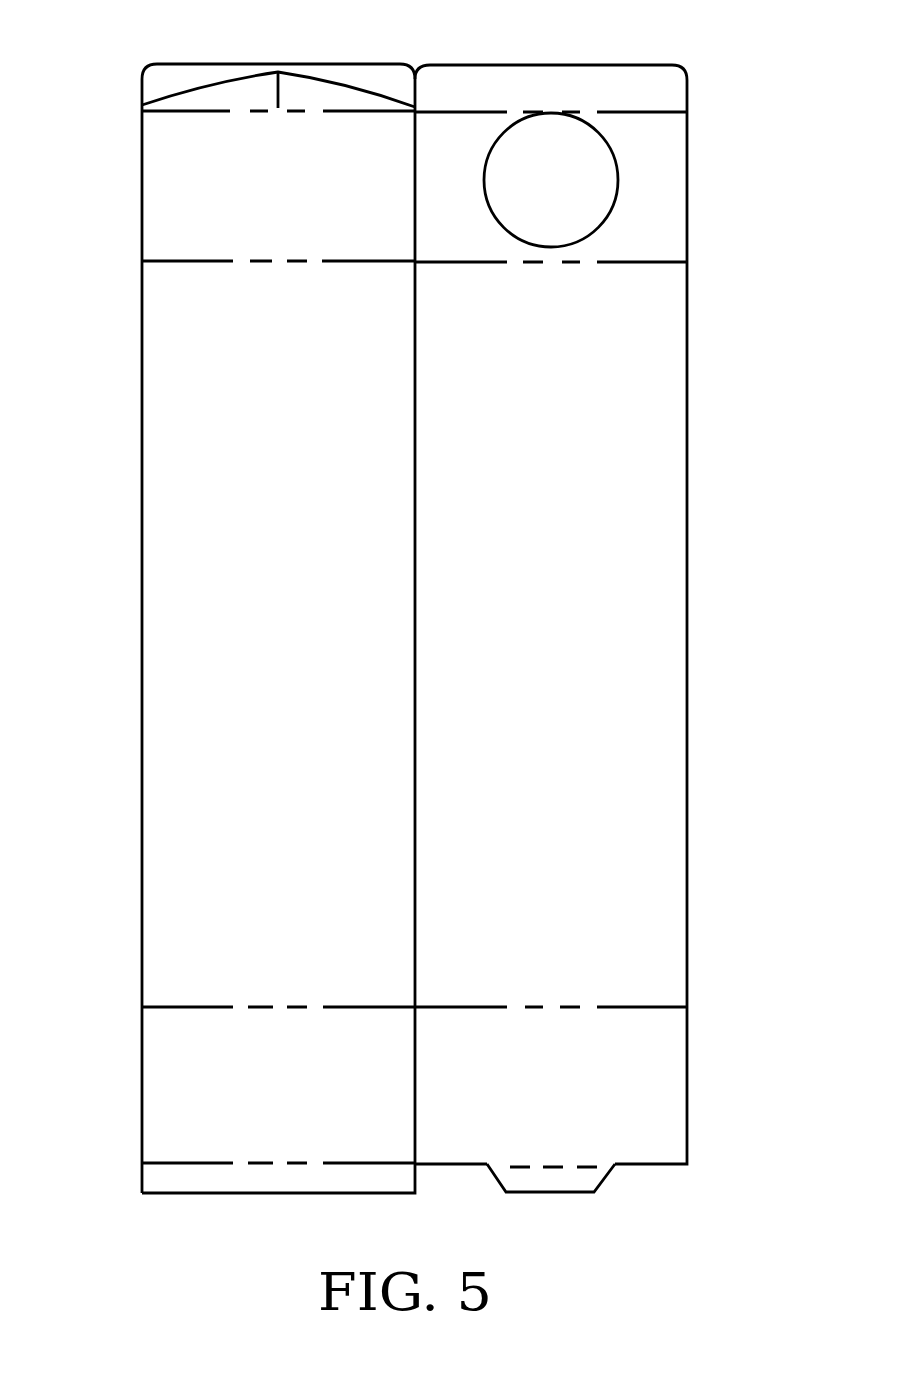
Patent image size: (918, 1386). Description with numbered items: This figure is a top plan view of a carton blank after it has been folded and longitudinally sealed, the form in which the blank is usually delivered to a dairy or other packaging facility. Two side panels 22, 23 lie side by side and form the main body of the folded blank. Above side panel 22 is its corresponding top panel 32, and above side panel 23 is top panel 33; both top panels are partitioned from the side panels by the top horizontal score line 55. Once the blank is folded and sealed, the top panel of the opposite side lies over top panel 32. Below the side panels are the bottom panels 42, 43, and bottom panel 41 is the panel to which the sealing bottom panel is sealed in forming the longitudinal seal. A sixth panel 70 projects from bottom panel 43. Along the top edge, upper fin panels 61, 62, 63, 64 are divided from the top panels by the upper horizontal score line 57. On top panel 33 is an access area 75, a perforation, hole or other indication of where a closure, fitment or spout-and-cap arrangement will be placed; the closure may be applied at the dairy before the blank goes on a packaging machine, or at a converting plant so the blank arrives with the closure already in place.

The side panel 22 is at (278, 634).
The side panel 23 is at (551, 634).
The top panel 32 is at (278, 186).
The top panel 33 is at (551, 187).
The bottom panel 41 is at (216, 1182).
The bottom panel 42 is at (278, 1085).
The bottom panel 43 is at (551, 1085).
The top horizontal score line 55 is at (182, 262).
The upper horizontal score line 57 is at (198, 112).
The upper fin panel 61 is at (172, 77).
The upper fin panel 62 is at (257, 91).
The upper fin panel 63 is at (346, 91).
The upper fin panel 64 is at (551, 88).
The sixth panel 70 is at (537, 1178).
The access area 75 is at (590, 153).